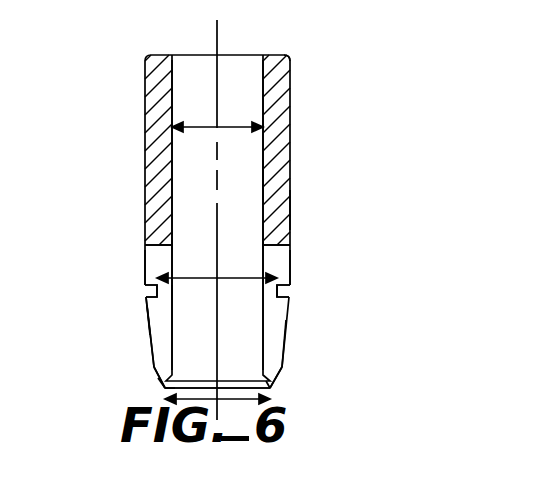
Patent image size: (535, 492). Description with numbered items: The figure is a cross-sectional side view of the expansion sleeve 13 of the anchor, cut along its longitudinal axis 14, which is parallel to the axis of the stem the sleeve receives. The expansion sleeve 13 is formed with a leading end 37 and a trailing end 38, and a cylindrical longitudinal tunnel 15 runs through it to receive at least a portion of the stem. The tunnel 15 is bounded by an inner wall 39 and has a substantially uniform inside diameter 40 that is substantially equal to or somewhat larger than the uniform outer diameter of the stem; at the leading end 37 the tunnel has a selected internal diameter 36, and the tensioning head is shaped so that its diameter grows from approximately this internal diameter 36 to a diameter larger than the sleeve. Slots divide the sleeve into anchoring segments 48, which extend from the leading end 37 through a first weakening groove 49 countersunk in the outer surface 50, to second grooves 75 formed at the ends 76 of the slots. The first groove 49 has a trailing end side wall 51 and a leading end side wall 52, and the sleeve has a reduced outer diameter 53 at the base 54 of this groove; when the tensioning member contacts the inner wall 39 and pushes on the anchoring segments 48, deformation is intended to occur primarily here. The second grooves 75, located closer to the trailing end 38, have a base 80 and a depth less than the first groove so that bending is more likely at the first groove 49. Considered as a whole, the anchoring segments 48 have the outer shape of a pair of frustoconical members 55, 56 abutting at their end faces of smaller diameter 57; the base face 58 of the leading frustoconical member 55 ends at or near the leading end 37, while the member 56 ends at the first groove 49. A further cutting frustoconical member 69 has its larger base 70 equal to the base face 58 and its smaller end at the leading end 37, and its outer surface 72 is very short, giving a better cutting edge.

The expansion sleeve 13 is at (292, 90).
The longitudinal axis 14 is at (218, 40).
The tunnel 15 is at (192, 65).
The internal diameter 36 is at (272, 401).
The leading end 37 is at (300, 381).
The trailing end 38 is at (292, 56).
The inner wall 39 is at (265, 177).
The inside diameter 40 is at (232, 125).
The anchoring segments 48 is at (293, 263).
The first weakening groove 49 is at (284, 292).
The outer surface 50 is at (291, 206).
The trailing end side wall 51 is at (150, 293).
The leading end side wall 52 is at (288, 299).
The outer diameter 53 is at (191, 280).
The base 54 is at (175, 293).
The frustoconical member 55 is at (153, 362).
The frustoconical member 56 is at (147, 299).
The end faces of smaller diameter 57 is at (282, 370).
The base face 58 is at (290, 373).
The cutting frustoconical member 69 is at (152, 390).
The larger base 70 is at (152, 386).
The outer surface 72 is at (292, 381).
The second grooves 75 is at (145, 247).
The ends 76 is at (174, 247).
The base 80 is at (270, 246).